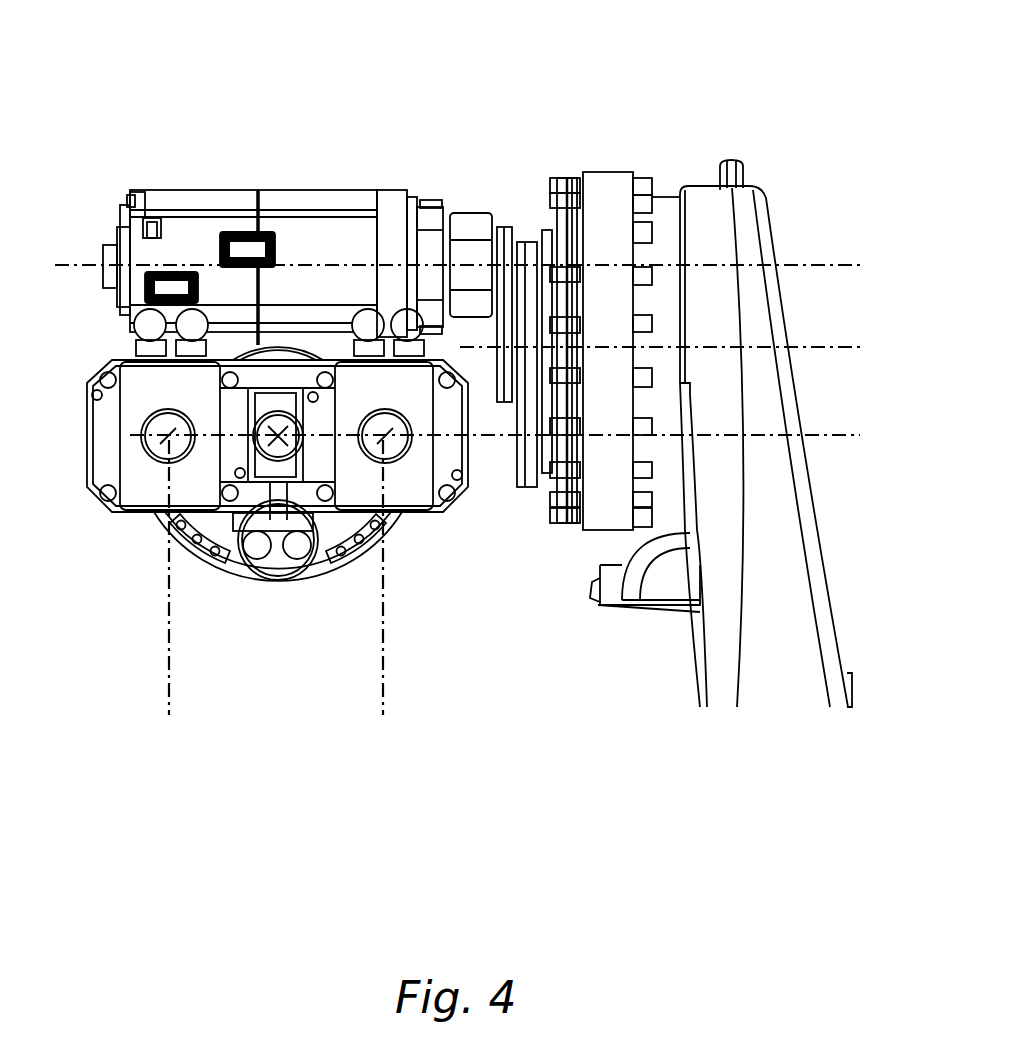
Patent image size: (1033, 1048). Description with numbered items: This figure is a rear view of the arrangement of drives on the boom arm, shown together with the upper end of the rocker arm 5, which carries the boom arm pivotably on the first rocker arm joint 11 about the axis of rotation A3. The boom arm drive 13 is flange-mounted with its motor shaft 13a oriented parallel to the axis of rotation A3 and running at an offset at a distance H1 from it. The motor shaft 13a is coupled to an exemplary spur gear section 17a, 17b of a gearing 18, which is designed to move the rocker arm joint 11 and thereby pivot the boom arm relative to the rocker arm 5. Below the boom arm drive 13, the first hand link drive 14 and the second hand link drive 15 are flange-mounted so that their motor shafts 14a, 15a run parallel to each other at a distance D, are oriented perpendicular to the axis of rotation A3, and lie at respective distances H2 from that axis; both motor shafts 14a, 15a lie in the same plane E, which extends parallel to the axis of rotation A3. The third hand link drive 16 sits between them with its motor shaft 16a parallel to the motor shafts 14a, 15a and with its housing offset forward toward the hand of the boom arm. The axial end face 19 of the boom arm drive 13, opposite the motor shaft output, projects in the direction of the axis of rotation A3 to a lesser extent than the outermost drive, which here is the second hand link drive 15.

The rocker arm 5 is at (727, 650).
The first rocker arm joint 11 is at (656, 190).
The boom arm drive 13 is at (288, 200).
The motor shaft 13a is at (103, 250).
The first hand link drive 14 is at (423, 453).
The motor shaft 14a is at (386, 438).
The second hand link drive 15 is at (135, 397).
The motor shaft 15a is at (172, 432).
The third hand link drive 16 is at (262, 492).
The motor shaft 16a is at (278, 437).
The spur gear section 17a is at (503, 233).
The spur gear section 17b is at (504, 330).
The gearing 18 is at (540, 345).
The axial end face 19 is at (100, 275).
The axis of rotation A3 is at (812, 347).
The plane E is at (757, 440).
The distance D is at (370, 702).
The distance H1 is at (713, 280).
The distance H2 is at (713, 362).